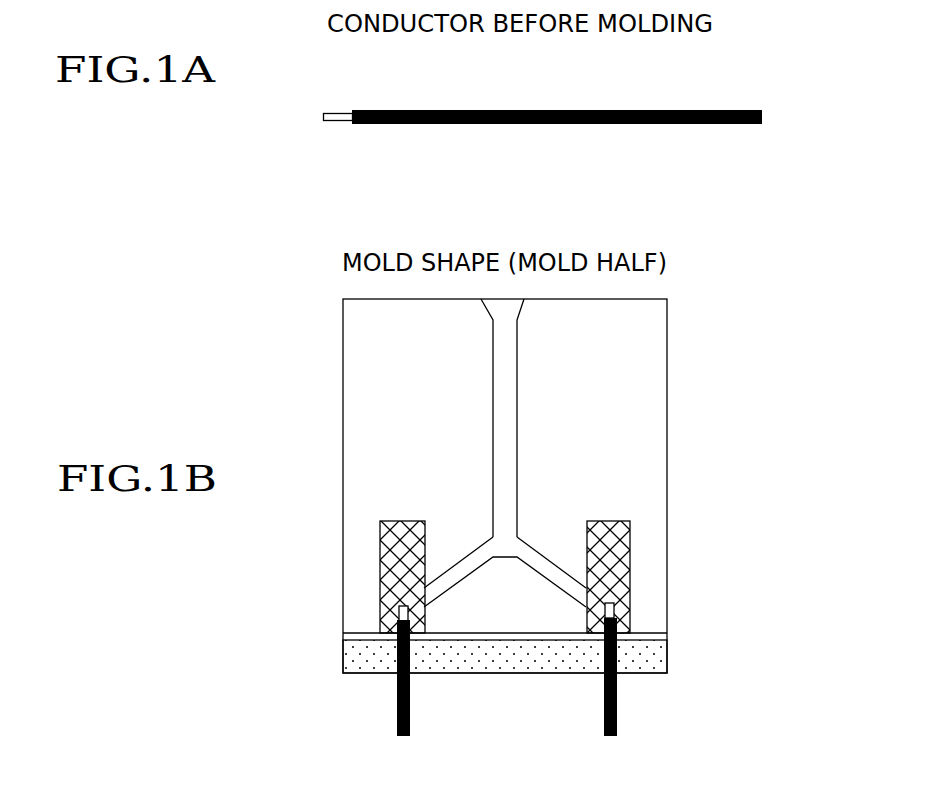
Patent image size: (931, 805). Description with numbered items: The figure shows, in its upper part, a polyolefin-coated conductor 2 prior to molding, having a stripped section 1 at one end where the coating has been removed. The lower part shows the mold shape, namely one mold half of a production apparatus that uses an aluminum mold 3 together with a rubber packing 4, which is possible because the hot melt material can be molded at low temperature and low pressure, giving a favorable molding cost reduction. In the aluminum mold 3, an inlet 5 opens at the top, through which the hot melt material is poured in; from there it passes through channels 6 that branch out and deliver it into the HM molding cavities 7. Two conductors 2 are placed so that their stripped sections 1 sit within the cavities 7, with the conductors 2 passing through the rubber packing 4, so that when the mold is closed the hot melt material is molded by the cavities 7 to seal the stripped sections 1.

In FIG. 1A, the stripped section 1 is at (342, 112).
In FIG. 1B, the stripped section 1 is at (627, 611).
In FIG. 1A, the polyolefin-coated conductor 2 is at (488, 110).
In FIG. 1B, the polyolefin-coated conductor 2 is at (617, 690).
In FIG. 1B, the aluminum mold 3 is at (629, 459).
In FIG. 1B, the rubber packing 4 is at (663, 654).
In FIG. 1B, the inlet 5 is at (508, 314).
In FIG. 1B, the channels 6 is at (507, 400).
In FIG. 1B, the HM molding cavities 7 is at (632, 543).